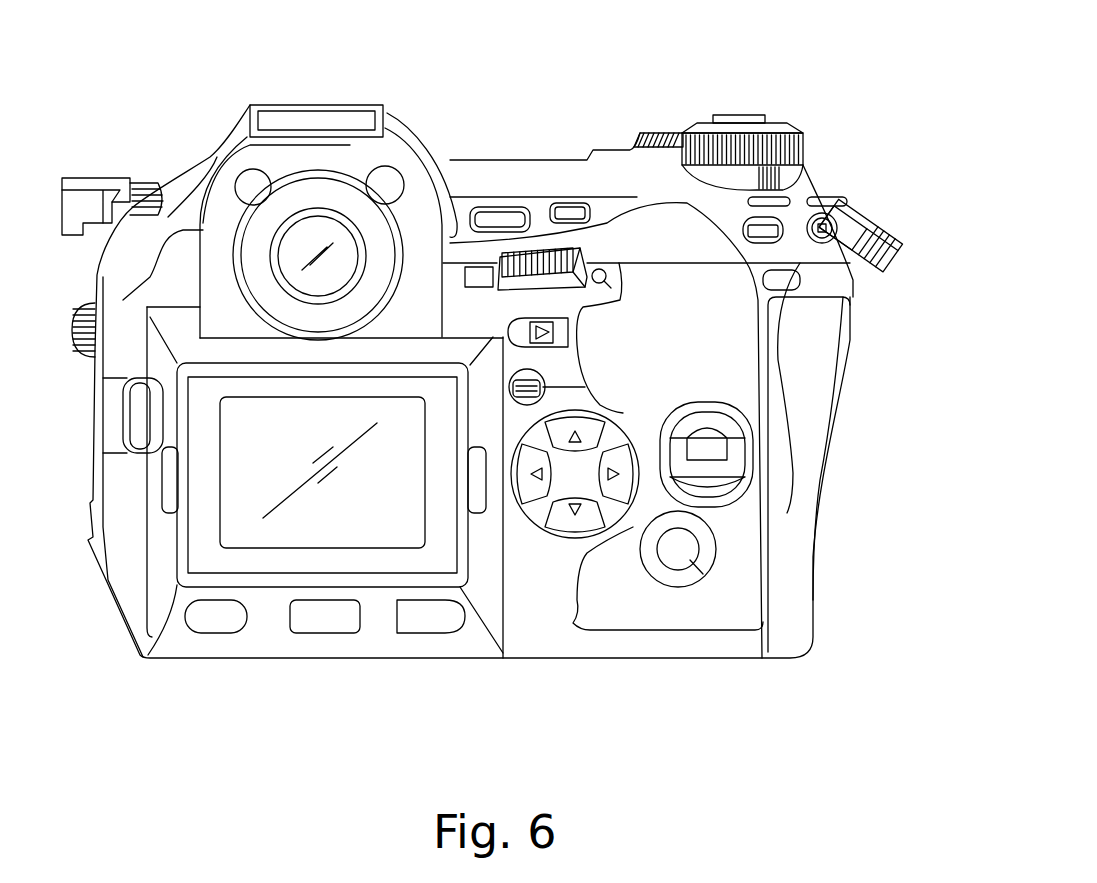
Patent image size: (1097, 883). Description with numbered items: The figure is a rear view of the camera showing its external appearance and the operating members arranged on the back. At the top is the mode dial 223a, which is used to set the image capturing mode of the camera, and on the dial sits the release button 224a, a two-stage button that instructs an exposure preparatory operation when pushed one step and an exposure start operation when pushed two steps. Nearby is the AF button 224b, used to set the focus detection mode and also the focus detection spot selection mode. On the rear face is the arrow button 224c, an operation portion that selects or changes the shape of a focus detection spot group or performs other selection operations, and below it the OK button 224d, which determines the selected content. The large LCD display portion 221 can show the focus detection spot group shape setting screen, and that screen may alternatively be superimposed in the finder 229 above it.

The LCD display portion 221 is at (283, 535).
The finder 229 is at (326, 237).
The mode dial 223a is at (795, 130).
The release button 224a is at (747, 120).
The AF button 224b is at (770, 240).
The arrow button 224c is at (557, 540).
The OK button 224d is at (717, 547).